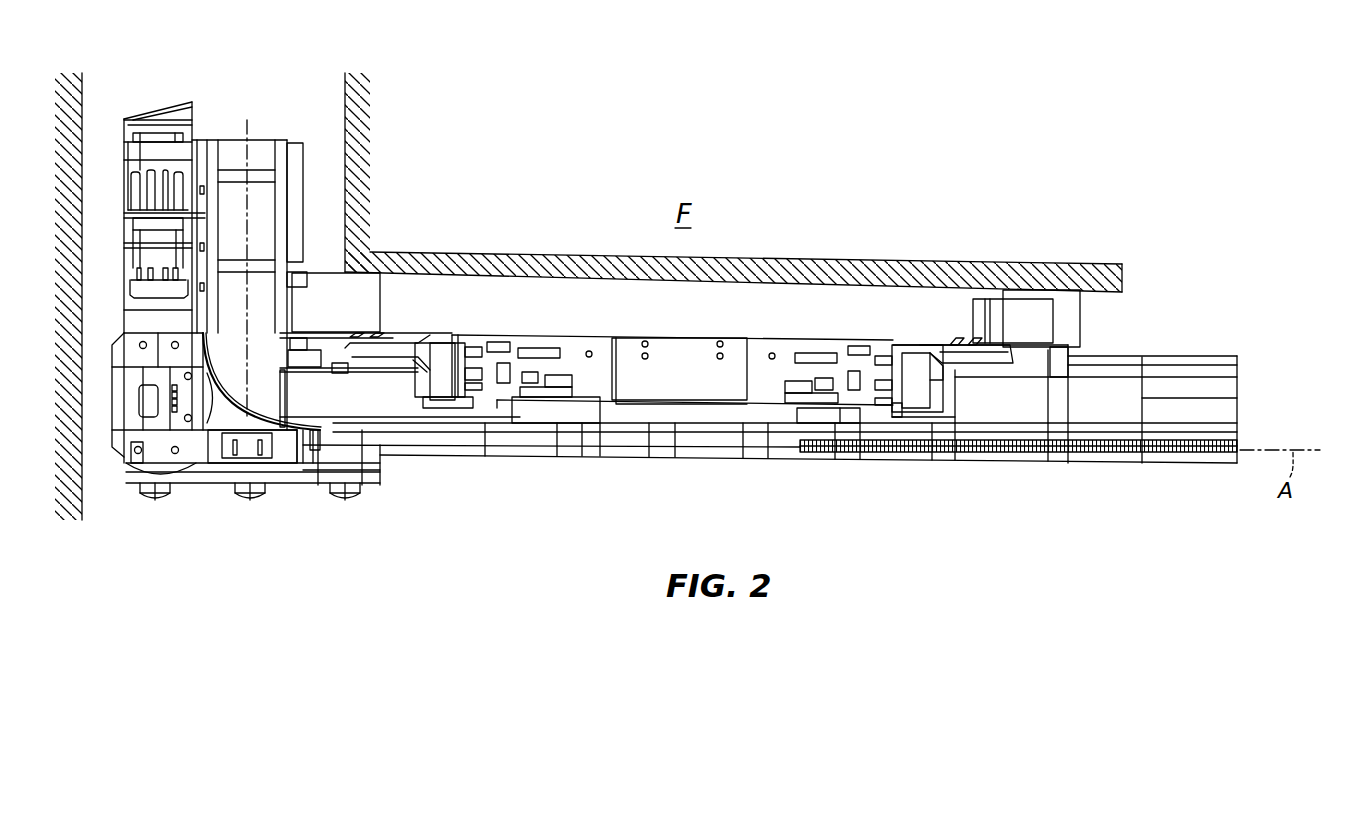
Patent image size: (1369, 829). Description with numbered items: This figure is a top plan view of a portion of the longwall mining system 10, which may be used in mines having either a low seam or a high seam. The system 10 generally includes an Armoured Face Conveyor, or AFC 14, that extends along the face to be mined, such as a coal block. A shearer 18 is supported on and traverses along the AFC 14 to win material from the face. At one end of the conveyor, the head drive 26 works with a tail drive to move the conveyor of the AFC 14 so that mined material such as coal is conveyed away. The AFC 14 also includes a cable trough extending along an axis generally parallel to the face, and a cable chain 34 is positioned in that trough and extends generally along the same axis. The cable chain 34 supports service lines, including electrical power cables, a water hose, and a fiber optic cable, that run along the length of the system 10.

The longwall mining system 10 is at (393, 558).
The Armoured Face Conveyor 14 is at (892, 473).
The shearer 18 is at (670, 373).
The head drive 26 is at (278, 507).
The cable chain 34 is at (1082, 452).